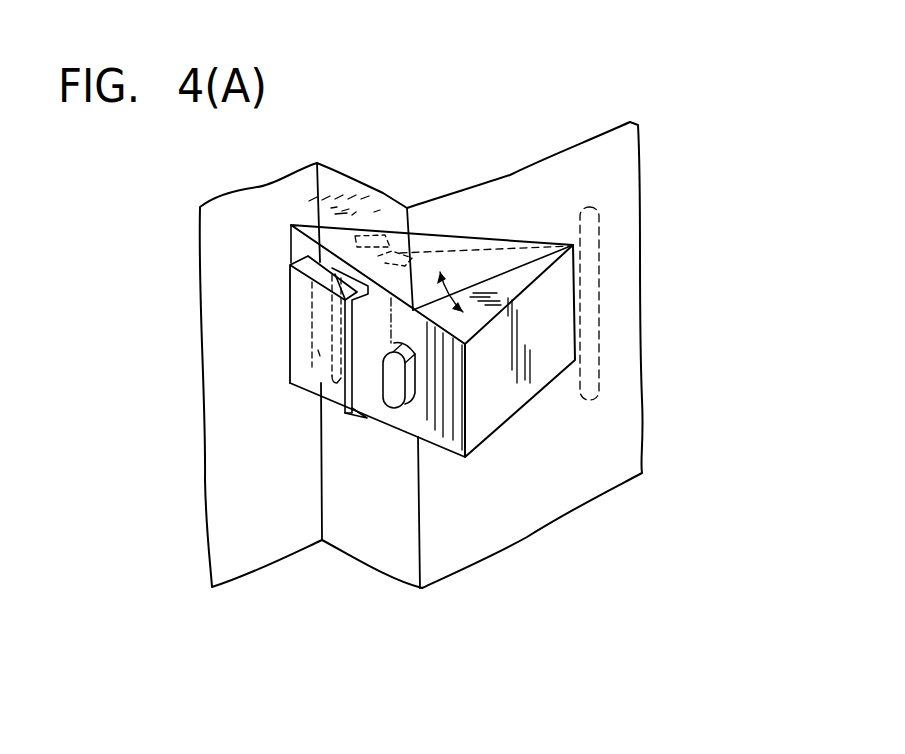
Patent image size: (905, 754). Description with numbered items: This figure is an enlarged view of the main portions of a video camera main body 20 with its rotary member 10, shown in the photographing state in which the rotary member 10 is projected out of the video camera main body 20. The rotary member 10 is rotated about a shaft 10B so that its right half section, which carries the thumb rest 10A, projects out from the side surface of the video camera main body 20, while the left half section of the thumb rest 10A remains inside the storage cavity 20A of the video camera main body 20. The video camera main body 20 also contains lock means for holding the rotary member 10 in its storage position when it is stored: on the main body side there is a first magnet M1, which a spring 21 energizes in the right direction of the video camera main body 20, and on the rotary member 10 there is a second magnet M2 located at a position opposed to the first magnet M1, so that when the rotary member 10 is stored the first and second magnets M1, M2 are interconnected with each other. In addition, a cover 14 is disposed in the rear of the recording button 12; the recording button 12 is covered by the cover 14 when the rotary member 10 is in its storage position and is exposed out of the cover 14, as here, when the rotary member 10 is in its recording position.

The rotary member 10 is at (546, 351).
The thumb rest 10A is at (467, 445).
The shaft 10B is at (588, 282).
The recording button 12 is at (413, 412).
The cover 14 is at (300, 357).
The video camera main body 20 is at (482, 182).
The storage cavity 20A is at (432, 246).
The spring 21 is at (377, 192).
The first magnet M1 is at (372, 228).
The second magnet M2 is at (453, 237).